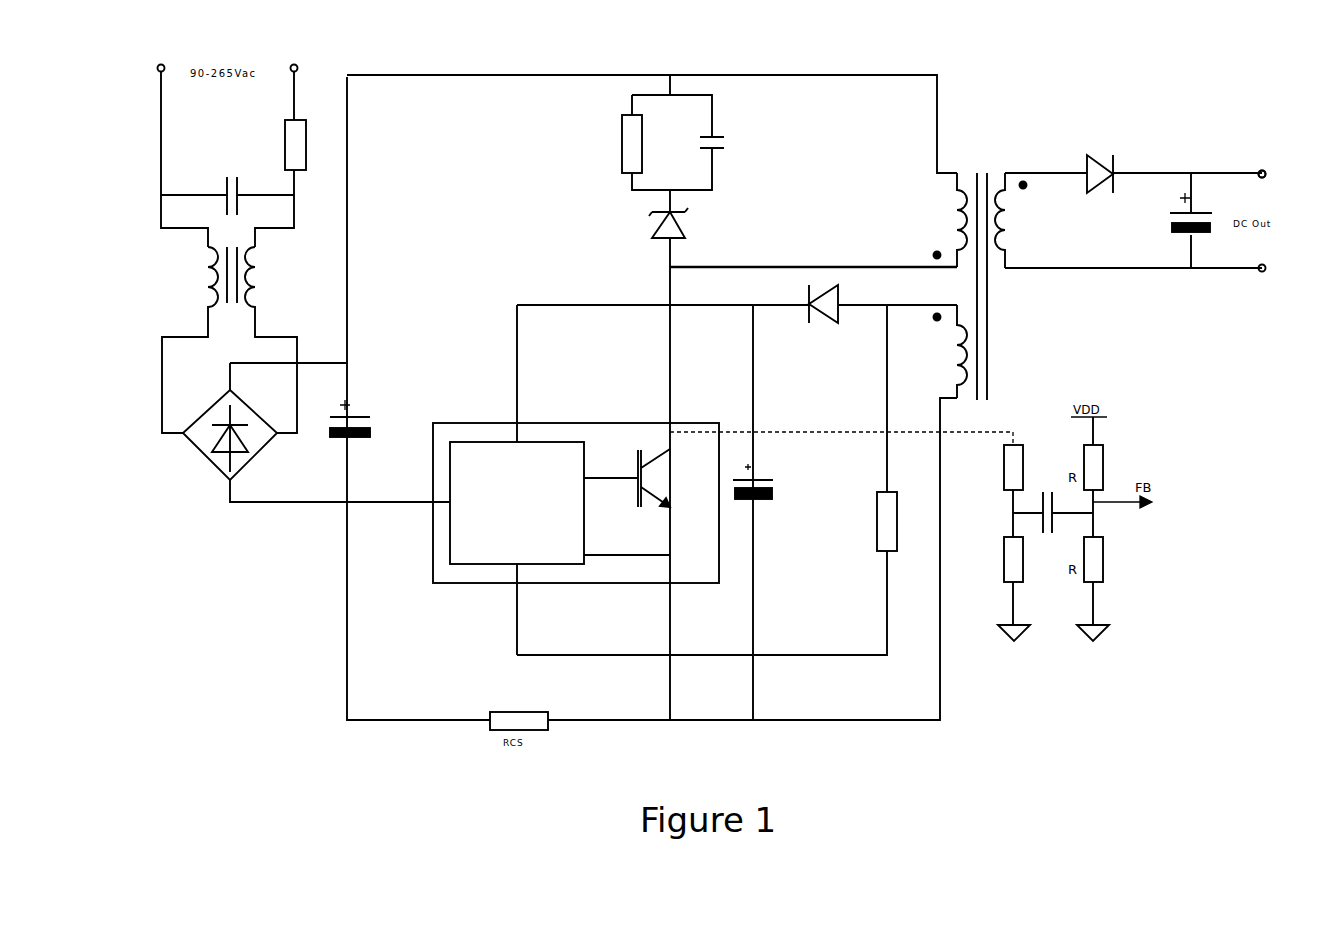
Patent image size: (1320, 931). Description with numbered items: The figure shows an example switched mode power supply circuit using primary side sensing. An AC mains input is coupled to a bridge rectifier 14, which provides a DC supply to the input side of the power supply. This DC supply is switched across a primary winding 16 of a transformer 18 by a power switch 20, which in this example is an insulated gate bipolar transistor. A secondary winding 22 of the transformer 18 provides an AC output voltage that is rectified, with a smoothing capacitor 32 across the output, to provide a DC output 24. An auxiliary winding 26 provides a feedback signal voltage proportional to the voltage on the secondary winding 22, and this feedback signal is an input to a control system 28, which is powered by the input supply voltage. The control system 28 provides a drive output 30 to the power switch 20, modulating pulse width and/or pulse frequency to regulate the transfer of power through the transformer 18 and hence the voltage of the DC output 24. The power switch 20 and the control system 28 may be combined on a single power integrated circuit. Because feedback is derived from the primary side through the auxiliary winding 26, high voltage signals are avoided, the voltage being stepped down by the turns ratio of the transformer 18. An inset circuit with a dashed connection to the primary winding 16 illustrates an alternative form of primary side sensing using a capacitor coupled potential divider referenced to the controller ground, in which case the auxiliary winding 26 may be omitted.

The bridge rectifier 14 is at (213, 451).
The primary winding 16 is at (945, 161).
The transformer 18 is at (988, 140).
The power switch 20 is at (683, 474).
The secondary winding 22 is at (1024, 164).
The DC output 24 is at (1245, 142).
The auxiliary winding 26 is at (946, 390).
The control system 28 is at (471, 553).
The drive output 30 is at (606, 467).
The output capacitor 32 is at (1199, 221).